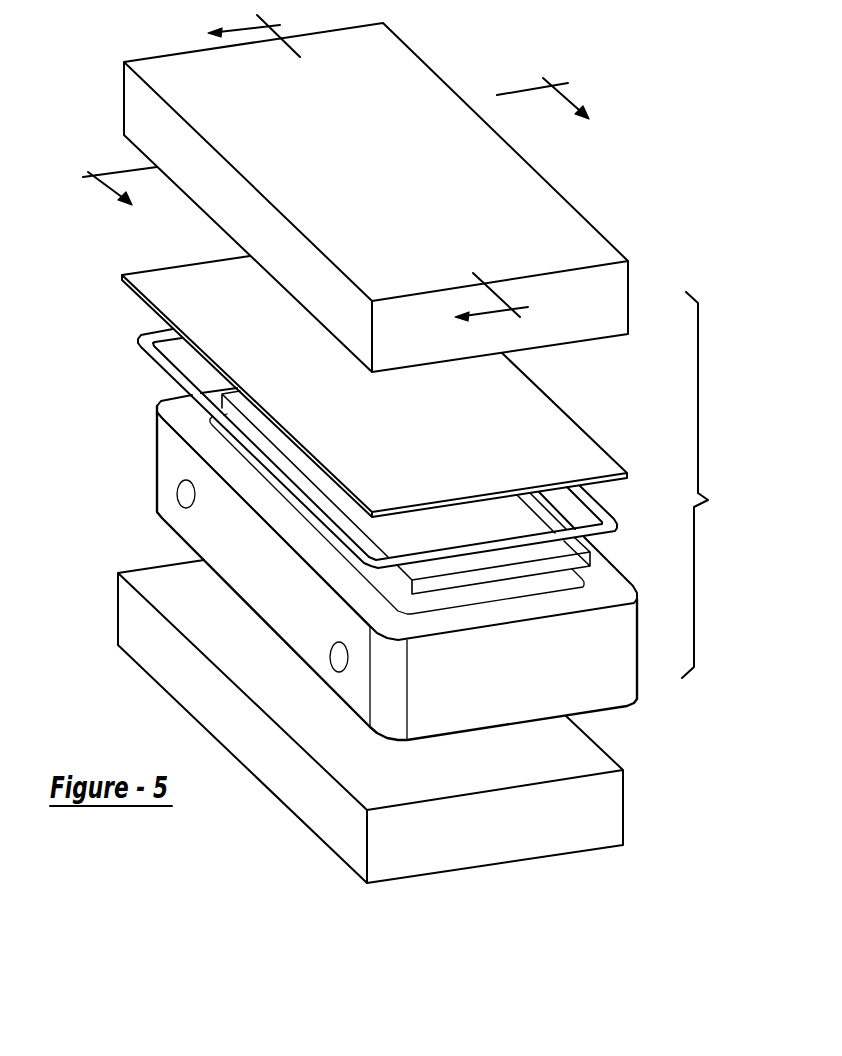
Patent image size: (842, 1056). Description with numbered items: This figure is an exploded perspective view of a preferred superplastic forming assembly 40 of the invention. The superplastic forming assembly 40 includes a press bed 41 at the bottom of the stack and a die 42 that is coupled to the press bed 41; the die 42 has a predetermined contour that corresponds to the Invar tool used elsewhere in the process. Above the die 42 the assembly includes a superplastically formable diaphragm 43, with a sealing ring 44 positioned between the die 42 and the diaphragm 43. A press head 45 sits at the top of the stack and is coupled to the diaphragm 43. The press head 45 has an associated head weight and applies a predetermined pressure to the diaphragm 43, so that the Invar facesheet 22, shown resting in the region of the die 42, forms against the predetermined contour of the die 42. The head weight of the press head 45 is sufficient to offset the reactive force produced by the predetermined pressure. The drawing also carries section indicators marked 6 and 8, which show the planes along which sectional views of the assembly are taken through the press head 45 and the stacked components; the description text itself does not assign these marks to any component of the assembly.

The superplastic forming assembly 40 is at (704, 485).
The press bed 41 is at (207, 690).
The die 42 is at (162, 499).
The superplastically formable diaphragm 43 is at (162, 303).
The sealing ring 44 is at (167, 375).
The press head 45 is at (138, 107).
The Invar facesheet 22 is at (567, 558).
The section line 6- 6 is at (357, 177).
The section line 8- 8 is at (345, 163).